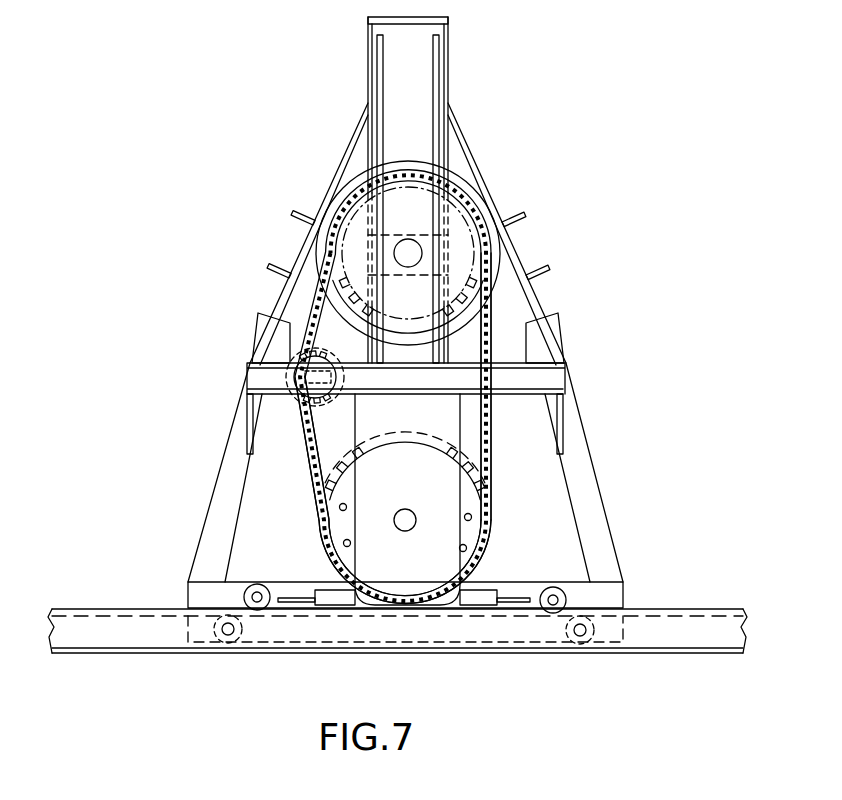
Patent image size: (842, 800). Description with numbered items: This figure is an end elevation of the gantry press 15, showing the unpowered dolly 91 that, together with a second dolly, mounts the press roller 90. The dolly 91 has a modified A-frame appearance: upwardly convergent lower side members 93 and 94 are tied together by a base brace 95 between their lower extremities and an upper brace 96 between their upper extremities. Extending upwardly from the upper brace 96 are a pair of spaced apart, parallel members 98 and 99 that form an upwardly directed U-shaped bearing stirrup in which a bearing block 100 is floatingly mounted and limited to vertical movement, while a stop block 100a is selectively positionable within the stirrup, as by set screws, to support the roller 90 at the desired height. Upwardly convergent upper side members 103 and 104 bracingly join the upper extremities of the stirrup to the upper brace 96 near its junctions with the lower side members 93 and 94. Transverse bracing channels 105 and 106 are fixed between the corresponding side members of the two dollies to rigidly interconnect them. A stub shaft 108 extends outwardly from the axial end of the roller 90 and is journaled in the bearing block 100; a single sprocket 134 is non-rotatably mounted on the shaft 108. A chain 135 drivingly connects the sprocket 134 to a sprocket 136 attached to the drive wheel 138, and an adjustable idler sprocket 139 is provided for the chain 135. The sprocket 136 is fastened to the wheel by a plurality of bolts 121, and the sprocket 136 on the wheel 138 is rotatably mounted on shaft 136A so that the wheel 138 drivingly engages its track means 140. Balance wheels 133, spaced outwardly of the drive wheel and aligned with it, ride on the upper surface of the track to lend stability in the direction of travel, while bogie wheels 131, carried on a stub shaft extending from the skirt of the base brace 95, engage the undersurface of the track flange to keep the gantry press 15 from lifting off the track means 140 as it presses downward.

The gantry press 15 is at (325, 130).
The press roller 90 is at (466, 184).
The dolly 91 is at (585, 425).
The lower side member 93 is at (222, 470).
The lower side member 94 is at (576, 474).
The base brace 95 is at (590, 583).
The upper brace 96 is at (527, 381).
The parallel member 98 is at (374, 62).
The parallel member 99 is at (450, 70).
The bearing block 100 is at (474, 289).
The stop block 100a is at (424, 280).
The upper side member 103 is at (327, 185).
The upper side member 104 is at (472, 146).
The channel 105 is at (270, 272).
The channel 106 is at (548, 272).
The stub shaft 108 is at (421, 231).
The bolts 121 is at (346, 506).
The bogie wheel 131 is at (235, 650).
The balance wheel 133 is at (262, 612).
The sprocket 134 is at (443, 234).
The chain 135 is at (488, 333).
The sprocket 136 is at (486, 518).
The shaft 136A is at (404, 524).
The drive wheel 138 is at (322, 560).
The idler sprocket 139 is at (318, 403).
The track means 140 is at (679, 620).